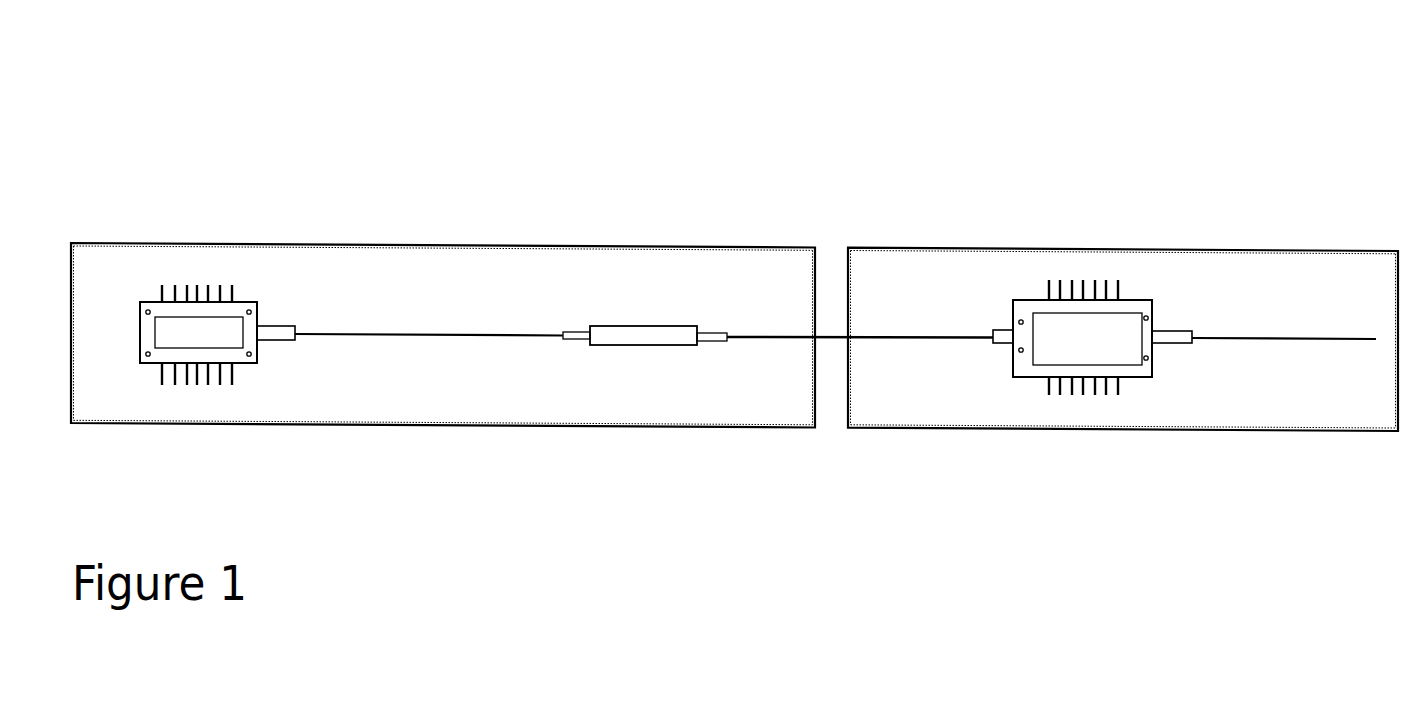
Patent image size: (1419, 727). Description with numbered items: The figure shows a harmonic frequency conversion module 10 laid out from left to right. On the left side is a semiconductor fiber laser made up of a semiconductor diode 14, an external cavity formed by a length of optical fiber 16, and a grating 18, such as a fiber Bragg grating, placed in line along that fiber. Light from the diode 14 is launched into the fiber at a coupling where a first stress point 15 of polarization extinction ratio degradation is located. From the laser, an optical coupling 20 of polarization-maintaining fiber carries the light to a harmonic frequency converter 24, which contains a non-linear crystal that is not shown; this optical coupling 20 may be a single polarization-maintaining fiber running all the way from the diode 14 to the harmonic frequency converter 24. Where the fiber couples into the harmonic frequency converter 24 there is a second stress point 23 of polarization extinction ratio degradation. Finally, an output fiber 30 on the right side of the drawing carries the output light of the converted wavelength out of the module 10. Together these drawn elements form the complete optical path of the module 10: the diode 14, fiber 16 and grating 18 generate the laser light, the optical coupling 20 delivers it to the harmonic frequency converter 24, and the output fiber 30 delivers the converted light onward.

The harmonic frequency conversion module 10 is at (617, 118).
The semiconductor diode 14 is at (195, 335).
The first stress point 15 is at (268, 333).
The optical fiber 16 is at (470, 325).
The grating 18 is at (645, 338).
The optical coupling 20 is at (840, 337).
The second stress point 23 is at (997, 330).
The harmonic frequency converter 24 is at (1085, 328).
The output fiber 30 is at (1275, 338).